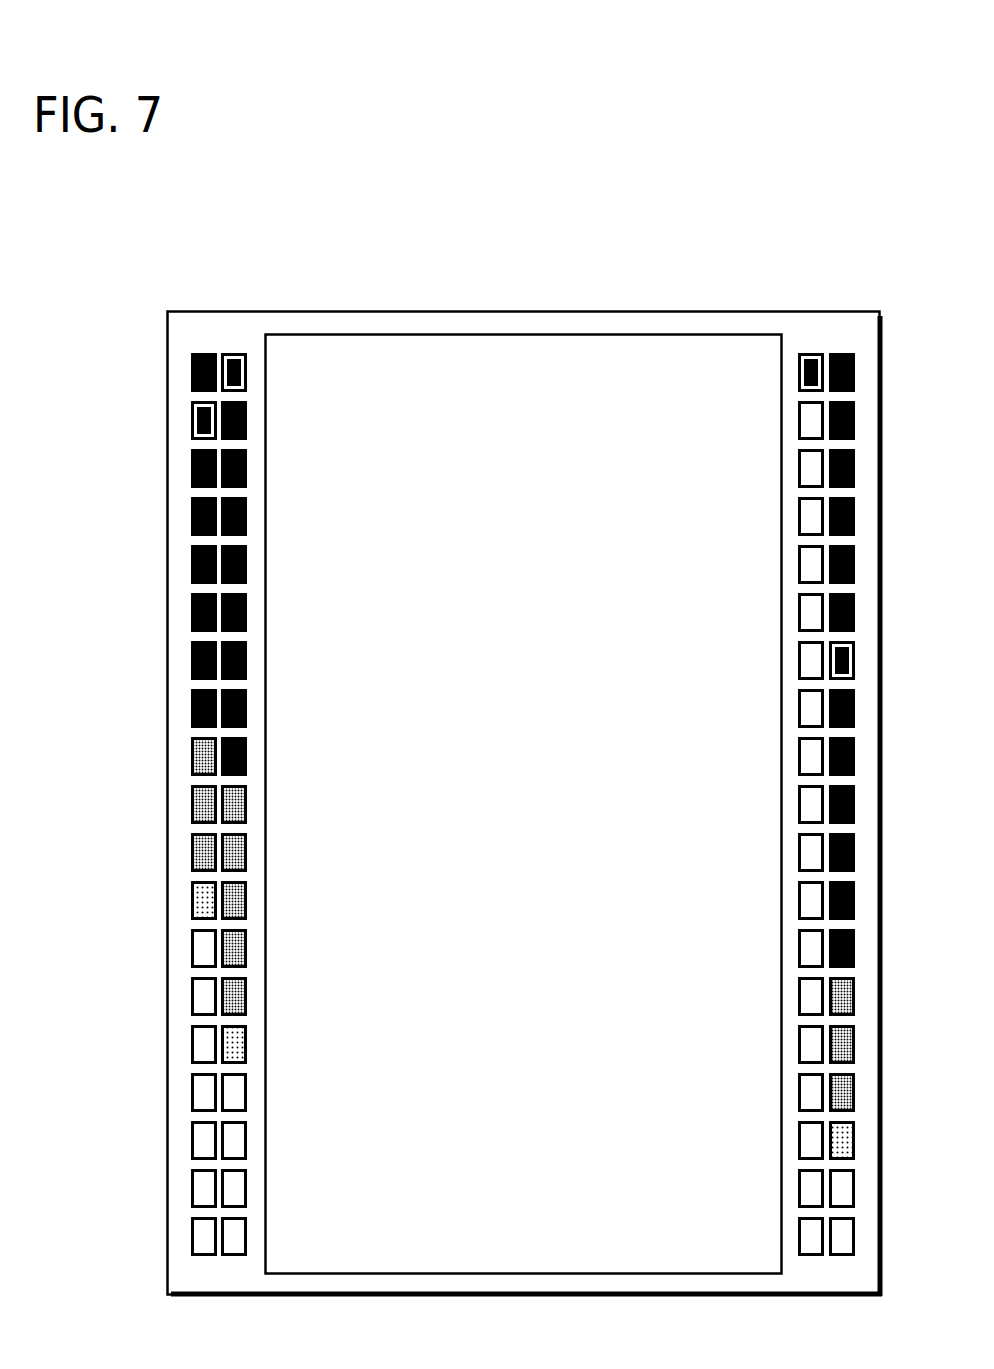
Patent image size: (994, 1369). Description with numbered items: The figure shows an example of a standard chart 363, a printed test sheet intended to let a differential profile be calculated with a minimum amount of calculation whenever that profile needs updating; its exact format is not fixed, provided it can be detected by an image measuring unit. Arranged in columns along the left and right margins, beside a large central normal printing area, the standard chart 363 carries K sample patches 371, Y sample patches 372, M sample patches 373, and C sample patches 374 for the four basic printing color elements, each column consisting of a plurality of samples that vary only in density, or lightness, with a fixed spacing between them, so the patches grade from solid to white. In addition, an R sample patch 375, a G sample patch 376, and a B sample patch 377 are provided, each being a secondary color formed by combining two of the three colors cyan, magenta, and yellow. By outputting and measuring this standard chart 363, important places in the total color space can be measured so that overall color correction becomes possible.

The standard chart 363 is at (203, 246).
The K sample patches 371 is at (855, 568).
The Y sample patches 372 is at (798, 560).
The M sample patches 373 is at (247, 563).
The C sample patches 374 is at (192, 565).
The R sample patch 375 is at (192, 368).
The G sample patch 376 is at (247, 365).
The B sample patch 377 is at (798, 372).